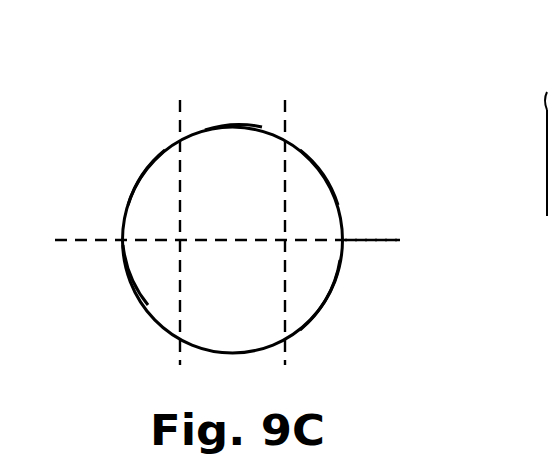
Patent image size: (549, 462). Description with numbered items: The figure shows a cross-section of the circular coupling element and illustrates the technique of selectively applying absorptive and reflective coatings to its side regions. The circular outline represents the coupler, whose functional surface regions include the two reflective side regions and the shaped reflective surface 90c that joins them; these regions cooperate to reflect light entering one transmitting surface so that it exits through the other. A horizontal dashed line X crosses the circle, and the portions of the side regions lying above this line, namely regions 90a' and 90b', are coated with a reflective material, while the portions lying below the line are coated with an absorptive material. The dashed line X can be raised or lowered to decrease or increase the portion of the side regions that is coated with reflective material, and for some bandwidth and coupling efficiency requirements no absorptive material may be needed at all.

The shaped reflective surface 90c is at (246, 83).
The reflective-coated portion of region 90a 90a' is at (115, 160).
The reflective-coated portion of region 90b 90b' is at (350, 159).
The dashed line X is at (401, 270).